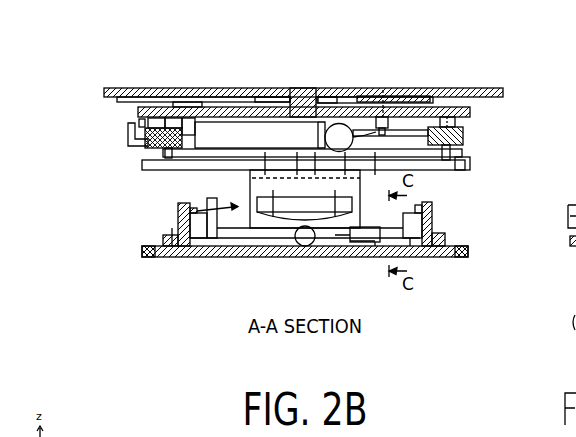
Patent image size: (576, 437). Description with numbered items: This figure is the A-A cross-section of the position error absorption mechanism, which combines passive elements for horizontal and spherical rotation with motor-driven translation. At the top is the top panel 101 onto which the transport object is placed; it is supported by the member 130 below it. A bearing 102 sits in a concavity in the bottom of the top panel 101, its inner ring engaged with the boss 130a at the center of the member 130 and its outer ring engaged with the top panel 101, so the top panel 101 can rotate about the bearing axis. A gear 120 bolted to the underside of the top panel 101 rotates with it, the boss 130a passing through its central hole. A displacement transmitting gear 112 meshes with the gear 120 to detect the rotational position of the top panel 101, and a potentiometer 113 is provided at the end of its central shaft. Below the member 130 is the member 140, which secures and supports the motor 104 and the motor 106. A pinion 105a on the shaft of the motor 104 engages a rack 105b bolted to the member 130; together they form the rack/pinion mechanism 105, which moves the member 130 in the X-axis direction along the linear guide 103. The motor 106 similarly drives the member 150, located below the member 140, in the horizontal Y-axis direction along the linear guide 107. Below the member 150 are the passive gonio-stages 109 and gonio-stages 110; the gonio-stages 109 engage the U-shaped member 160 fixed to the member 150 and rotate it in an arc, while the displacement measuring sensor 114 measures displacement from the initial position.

The top panel 101 is at (123, 88).
The member 130 is at (190, 88).
The gear 120 is at (268, 97).
The boss 130a is at (303, 100).
The bearing 102 is at (325, 88).
The displacement transmitting gear 112 is at (394, 100).
The linear guide 103 is at (452, 120).
The potentiometer 113 is at (441, 114).
The rack/pinion mechanism 105 is at (48, 102).
The rack 105b is at (145, 116).
The pinion 105a is at (145, 140).
The motor 104 is at (247, 135).
The motor 106 is at (463, 128).
The member 140 is at (463, 135).
The member 150 is at (466, 165).
The linear guide 107 is at (458, 170).
The member 160 is at (250, 190).
The displacement measuring sensor 114 is at (289, 250).
The gonio-stage 109 is at (177, 215).
The gonio-stage 110 is at (432, 215).